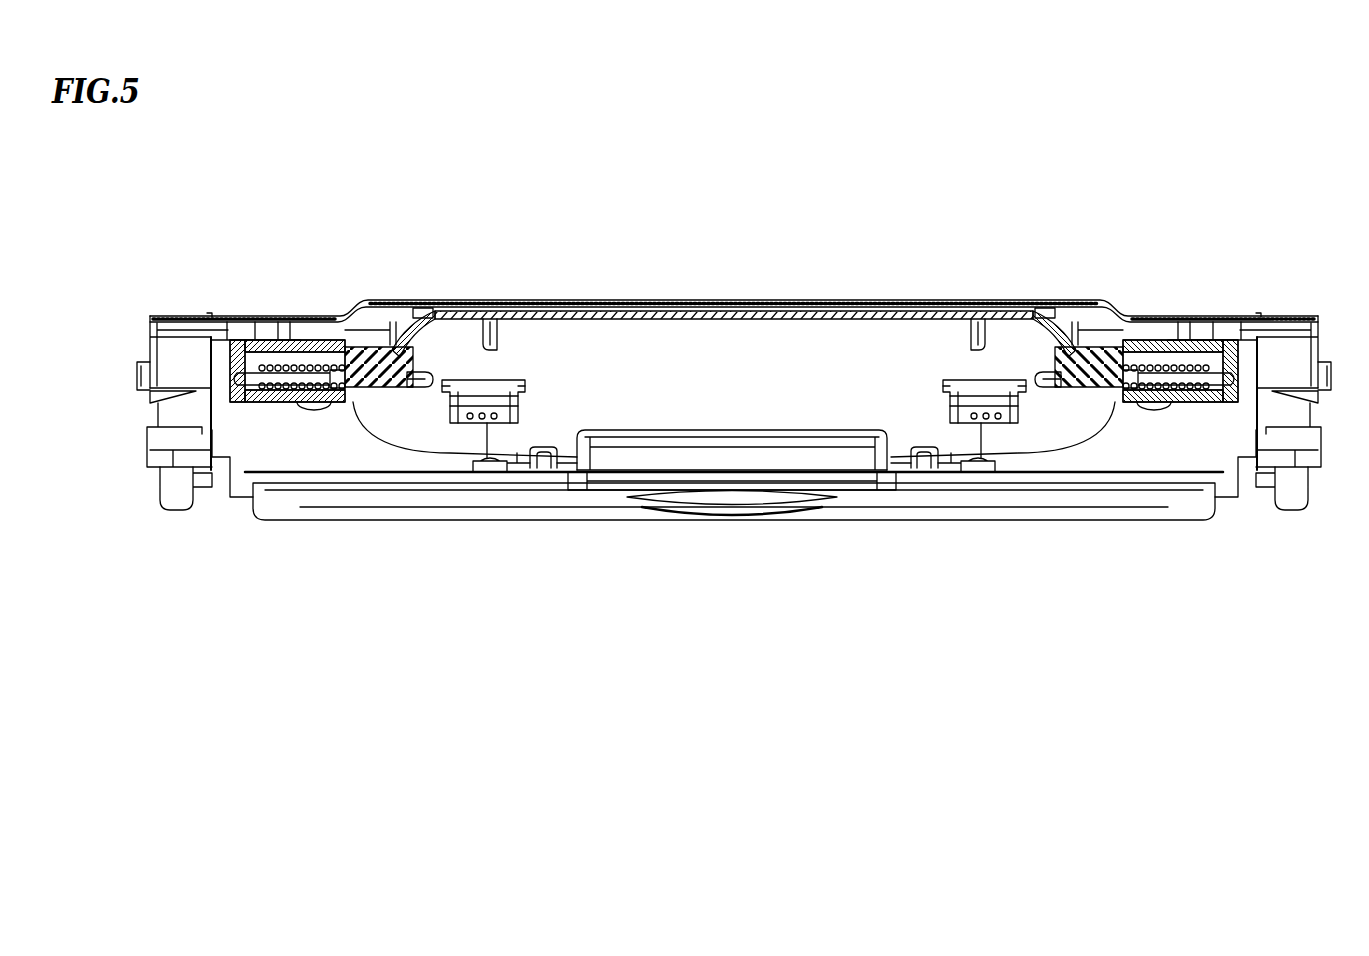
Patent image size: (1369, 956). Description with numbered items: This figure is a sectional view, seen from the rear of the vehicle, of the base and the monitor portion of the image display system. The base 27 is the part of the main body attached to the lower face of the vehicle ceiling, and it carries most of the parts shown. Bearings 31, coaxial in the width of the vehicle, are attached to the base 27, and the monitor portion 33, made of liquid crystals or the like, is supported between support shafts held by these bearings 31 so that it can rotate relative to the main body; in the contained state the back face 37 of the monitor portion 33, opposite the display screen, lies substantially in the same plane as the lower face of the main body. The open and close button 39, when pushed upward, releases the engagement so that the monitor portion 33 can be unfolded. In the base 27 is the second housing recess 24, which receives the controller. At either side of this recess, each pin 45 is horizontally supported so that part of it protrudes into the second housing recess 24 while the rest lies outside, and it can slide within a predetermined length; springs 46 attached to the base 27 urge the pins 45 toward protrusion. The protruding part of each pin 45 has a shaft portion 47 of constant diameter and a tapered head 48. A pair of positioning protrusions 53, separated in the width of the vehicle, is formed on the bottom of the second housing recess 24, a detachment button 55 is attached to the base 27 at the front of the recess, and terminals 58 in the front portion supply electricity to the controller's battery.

The second housing recess 24 is at (733, 358).
The base 27 is at (147, 315).
The bearings 31 is at (178, 506).
The monitor portion 33 is at (893, 521).
The back face 37 is at (515, 522).
The open and close button 39 is at (730, 521).
The pin 45 is at (431, 362).
The springs 46 is at (312, 362).
The shaft portion 47 is at (418, 389).
The head 48 is at (431, 392).
The positioning protrusions 53 is at (483, 322).
The detachment button 55 is at (610, 499).
The terminals 58 is at (495, 413).